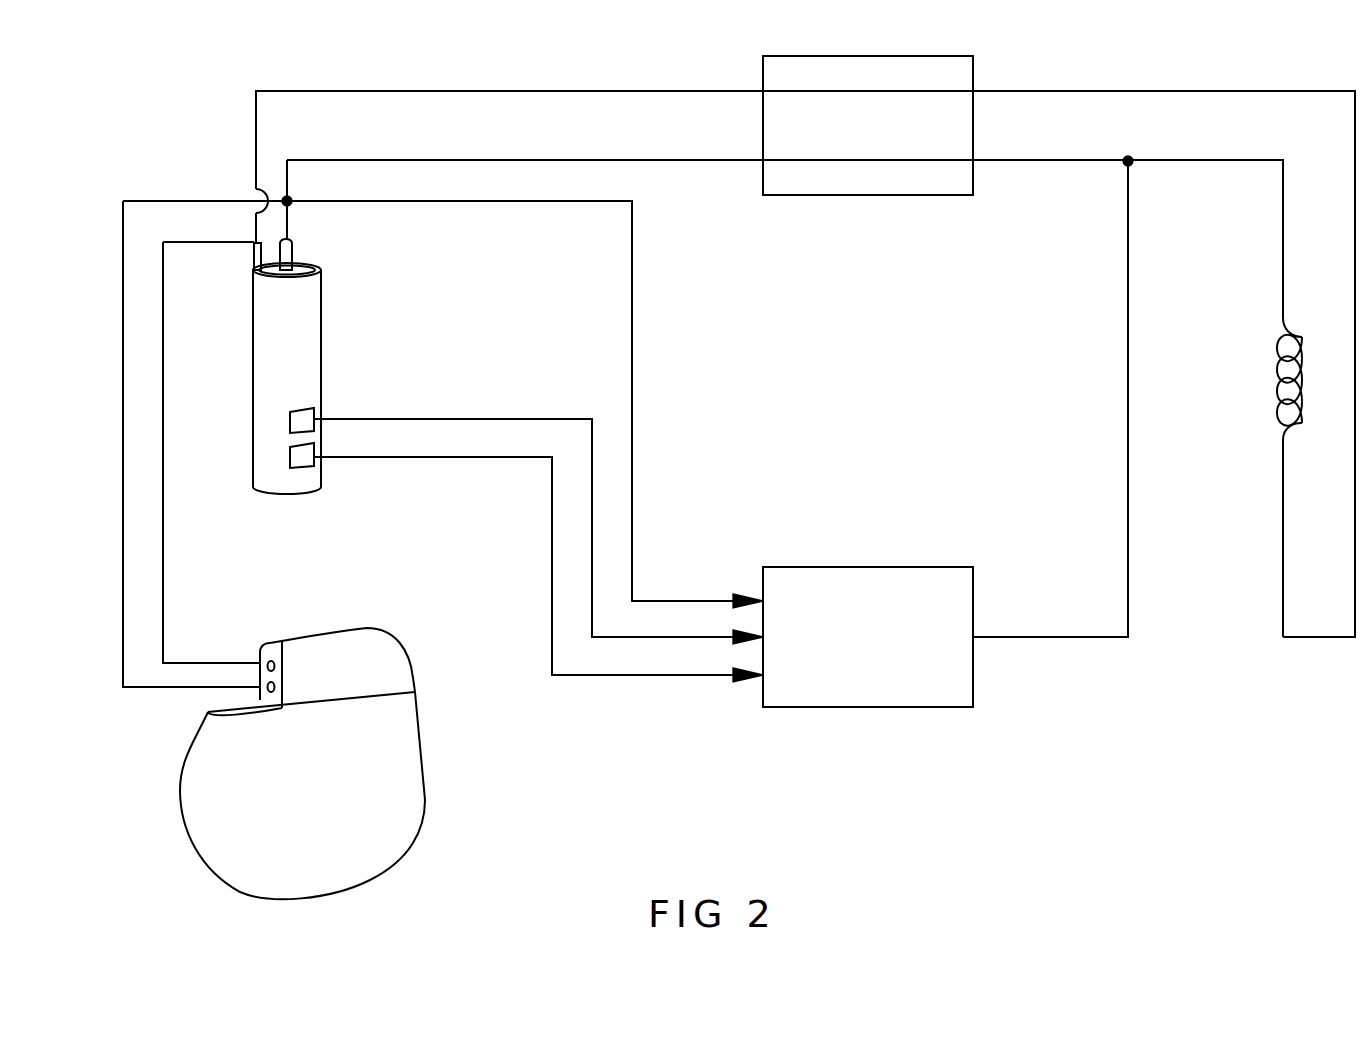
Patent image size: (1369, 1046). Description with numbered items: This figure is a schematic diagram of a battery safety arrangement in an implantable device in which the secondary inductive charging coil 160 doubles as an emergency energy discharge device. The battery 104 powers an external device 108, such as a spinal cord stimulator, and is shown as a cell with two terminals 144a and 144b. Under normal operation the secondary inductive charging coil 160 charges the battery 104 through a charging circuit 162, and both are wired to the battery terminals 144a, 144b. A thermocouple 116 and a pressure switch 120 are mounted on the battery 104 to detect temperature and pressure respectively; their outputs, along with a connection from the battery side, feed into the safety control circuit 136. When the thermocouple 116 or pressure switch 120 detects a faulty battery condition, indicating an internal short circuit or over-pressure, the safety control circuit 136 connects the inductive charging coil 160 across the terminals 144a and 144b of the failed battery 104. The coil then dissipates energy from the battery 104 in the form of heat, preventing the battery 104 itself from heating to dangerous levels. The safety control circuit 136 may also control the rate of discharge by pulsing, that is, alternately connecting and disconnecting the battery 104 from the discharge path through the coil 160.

The battery 104 is at (253, 374).
The terminal 144a is at (250, 258).
The terminal 144b is at (310, 232).
The thermocouple 116 is at (321, 414).
The pressure switch 120 is at (321, 462).
The external device 108 is at (311, 632).
The charging circuit 162 is at (866, 197).
The safety control circuit 136 is at (866, 708).
The secondary inductive charging coil 160 is at (1267, 379).